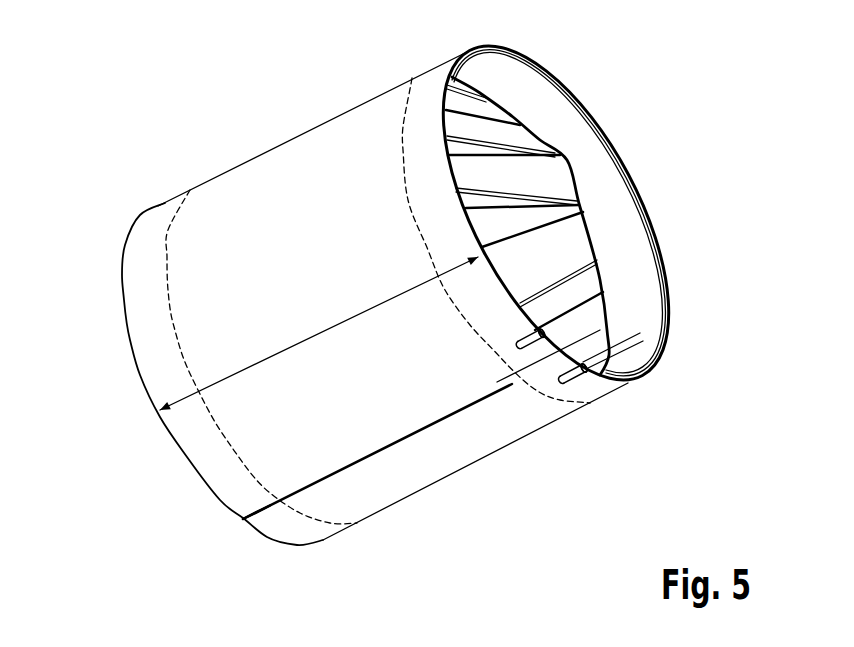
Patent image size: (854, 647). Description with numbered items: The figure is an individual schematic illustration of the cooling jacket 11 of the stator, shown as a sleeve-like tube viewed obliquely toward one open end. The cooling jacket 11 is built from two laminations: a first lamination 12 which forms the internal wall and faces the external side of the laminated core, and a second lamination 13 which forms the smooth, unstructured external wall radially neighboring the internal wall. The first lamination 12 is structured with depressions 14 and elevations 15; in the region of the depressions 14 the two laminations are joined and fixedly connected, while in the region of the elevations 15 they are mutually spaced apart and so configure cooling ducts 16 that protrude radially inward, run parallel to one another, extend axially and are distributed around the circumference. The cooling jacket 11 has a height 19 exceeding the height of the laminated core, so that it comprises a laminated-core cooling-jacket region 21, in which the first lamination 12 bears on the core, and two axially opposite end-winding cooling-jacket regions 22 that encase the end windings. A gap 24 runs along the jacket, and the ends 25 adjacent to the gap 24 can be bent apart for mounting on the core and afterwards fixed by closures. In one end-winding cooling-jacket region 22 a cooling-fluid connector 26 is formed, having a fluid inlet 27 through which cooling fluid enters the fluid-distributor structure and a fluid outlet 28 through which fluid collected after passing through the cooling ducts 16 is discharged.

The cooling jacket 11 is at (300, 134).
The first lamination 12 is at (601, 171).
The second lamination 13 is at (366, 121).
The depressions 14 is at (563, 240).
The elevations 15 is at (534, 162).
The cooling duct 16 is at (549, 186).
The height 19 is at (327, 330).
The laminated-core cooling-jacket region 21 is at (254, 174).
The end-winding cooling-jacket regions 22 is at (432, 76).
The gap 24 is at (262, 512).
The ends 25 is at (327, 464).
The cooling-fluid connector 26 is at (539, 367).
The fluid inlet 27 is at (518, 354).
The fluid outlet 28 is at (576, 388).